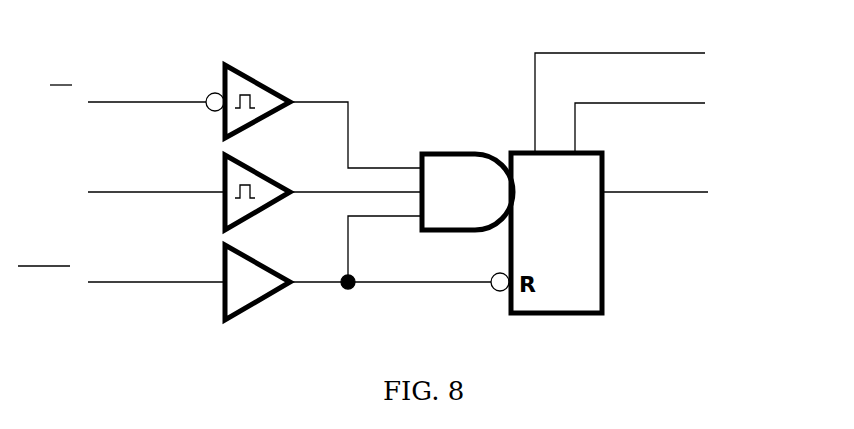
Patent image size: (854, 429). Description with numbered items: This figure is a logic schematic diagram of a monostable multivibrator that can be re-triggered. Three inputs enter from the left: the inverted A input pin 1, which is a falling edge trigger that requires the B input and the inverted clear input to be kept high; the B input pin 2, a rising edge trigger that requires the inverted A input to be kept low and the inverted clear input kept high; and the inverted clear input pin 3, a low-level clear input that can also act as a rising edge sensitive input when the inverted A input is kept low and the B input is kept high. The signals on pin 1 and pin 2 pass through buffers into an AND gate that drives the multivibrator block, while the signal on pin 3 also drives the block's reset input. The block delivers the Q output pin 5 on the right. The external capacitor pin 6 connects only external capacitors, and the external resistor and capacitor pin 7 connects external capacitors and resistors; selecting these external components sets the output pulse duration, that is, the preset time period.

The A-bar input pin 1 is at (128, 94).
The B input pin 2 is at (138, 181).
The CLR-bar input pin 3 is at (121, 274).
The Q output pin 5 is at (672, 184).
The Cext pin 6 is at (671, 112).
The Rext/Cext pin 7 is at (678, 89).